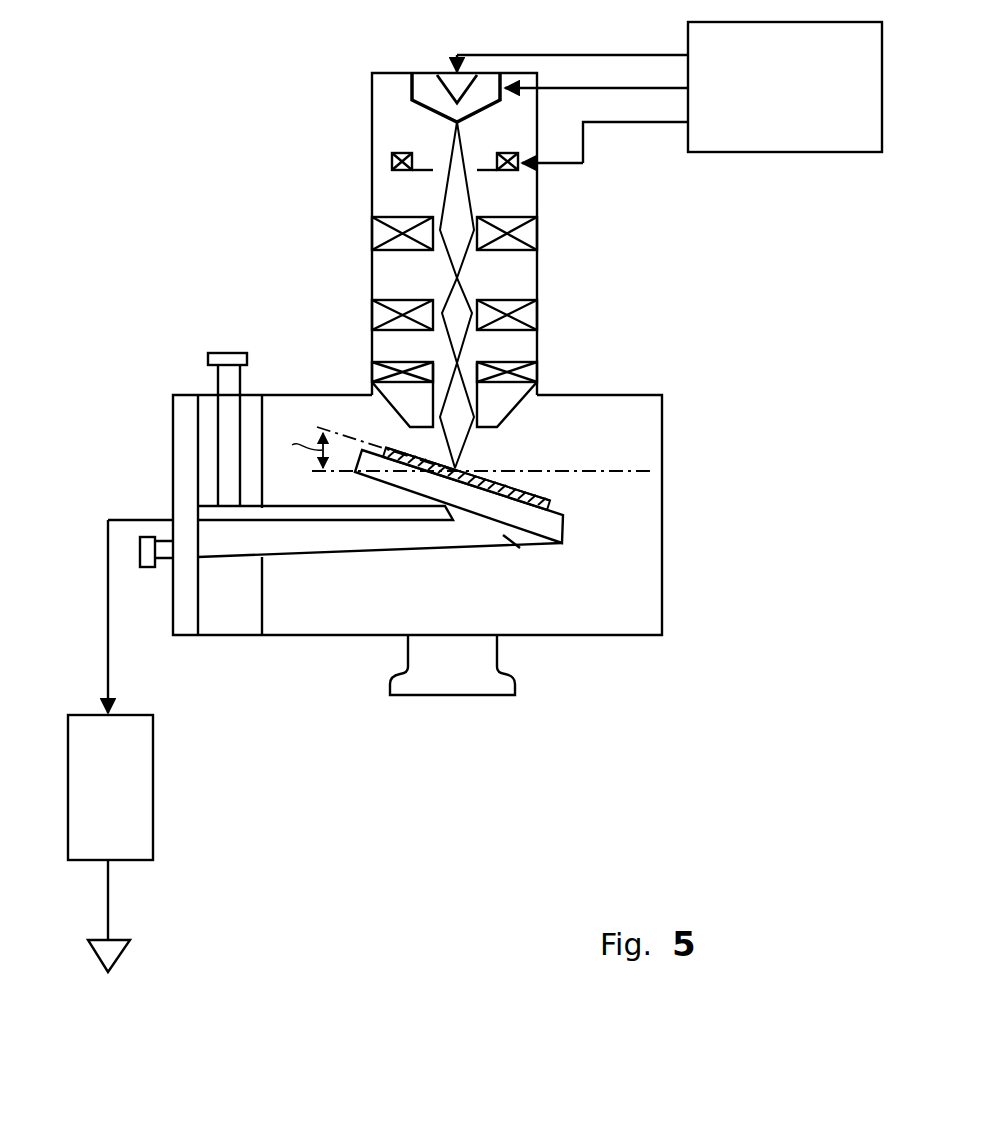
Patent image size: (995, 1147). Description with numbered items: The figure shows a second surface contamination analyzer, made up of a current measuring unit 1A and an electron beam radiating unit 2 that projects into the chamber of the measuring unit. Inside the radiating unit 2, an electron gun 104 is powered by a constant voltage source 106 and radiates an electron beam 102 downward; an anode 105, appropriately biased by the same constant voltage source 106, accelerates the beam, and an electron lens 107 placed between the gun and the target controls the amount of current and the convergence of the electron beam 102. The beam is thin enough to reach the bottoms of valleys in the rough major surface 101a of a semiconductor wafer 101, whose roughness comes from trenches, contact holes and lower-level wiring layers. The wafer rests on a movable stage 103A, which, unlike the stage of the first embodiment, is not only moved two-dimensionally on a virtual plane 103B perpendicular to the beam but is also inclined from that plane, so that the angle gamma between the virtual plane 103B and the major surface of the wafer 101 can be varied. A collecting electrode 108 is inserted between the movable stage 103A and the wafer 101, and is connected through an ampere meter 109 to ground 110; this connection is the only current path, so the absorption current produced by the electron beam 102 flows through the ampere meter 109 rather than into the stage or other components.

The electron beam radiating unit 2 is at (640, 292).
The electron gun 104 is at (457, 85).
The anode 105 is at (393, 166).
The electron beam 102 is at (455, 283).
The electron lens 107 is at (532, 237).
The constant voltage source 106 is at (790, 145).
The current measuring unit 1A is at (667, 446).
The collecting electrode 108 is at (558, 527).
The semiconductor wafer 101 is at (552, 507).
The major surface 101a is at (517, 488).
The virtual plane 103B is at (630, 471).
The movable stage 103A is at (503, 535).
The ampere meter 109 is at (143, 797).
The ground 110 is at (113, 950).